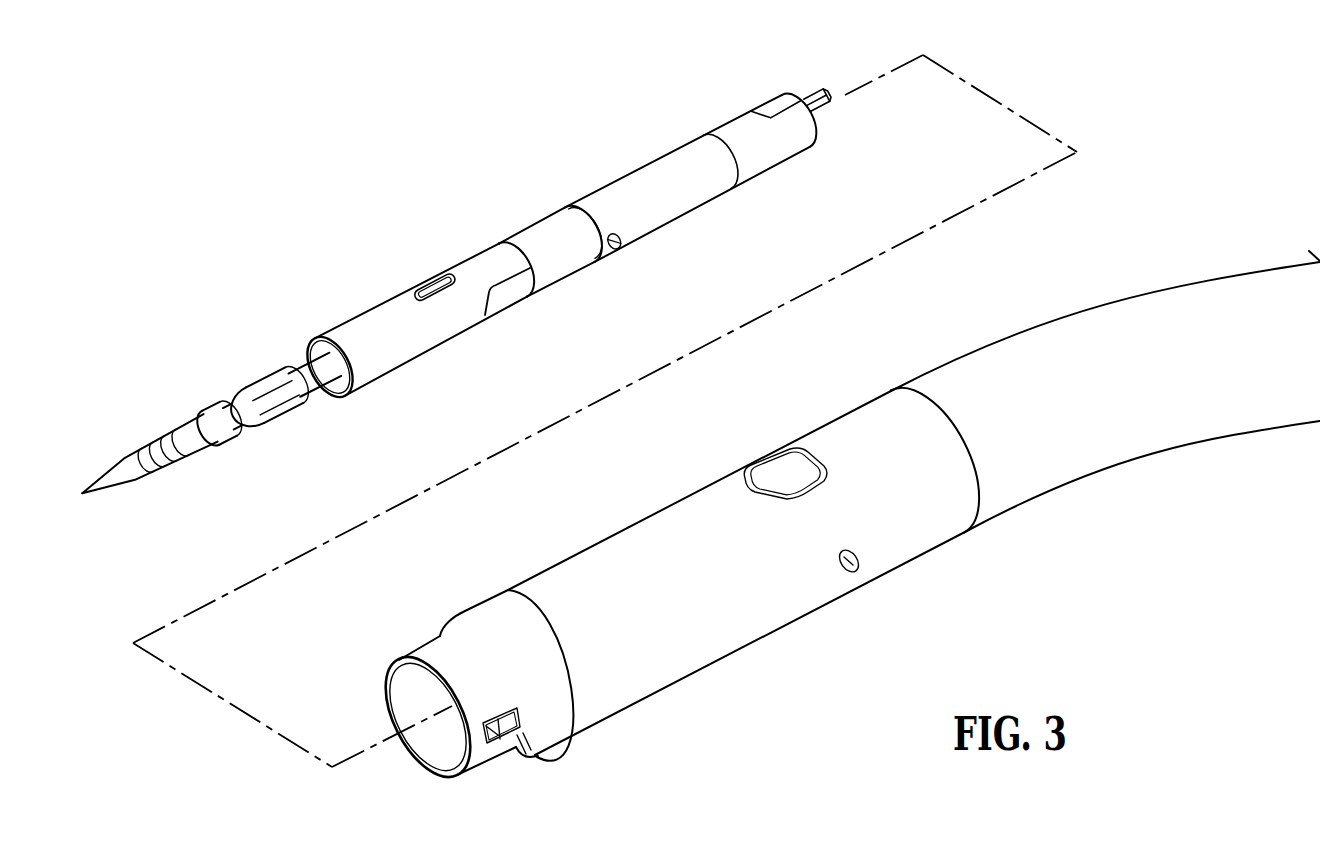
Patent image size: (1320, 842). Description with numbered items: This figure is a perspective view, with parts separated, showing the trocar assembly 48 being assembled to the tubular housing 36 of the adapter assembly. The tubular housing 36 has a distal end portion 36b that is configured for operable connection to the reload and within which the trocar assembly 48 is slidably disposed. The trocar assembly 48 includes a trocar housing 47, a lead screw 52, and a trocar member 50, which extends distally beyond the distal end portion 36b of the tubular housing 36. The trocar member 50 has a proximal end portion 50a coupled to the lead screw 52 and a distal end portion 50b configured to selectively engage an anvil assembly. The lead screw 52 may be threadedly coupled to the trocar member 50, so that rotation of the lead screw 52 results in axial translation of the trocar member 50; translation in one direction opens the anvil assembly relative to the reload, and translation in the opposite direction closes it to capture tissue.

The tubular housing 36 is at (1002, 548).
The distal end portion 36b is at (697, 669).
The trocar housing 47 is at (612, 187).
The trocar assembly 48 is at (444, 201).
The trocar member 50 is at (179, 412).
The proximal end portion 50a is at (293, 365).
The distal end portion 50b is at (122, 477).
The lead screw 52 is at (813, 99).